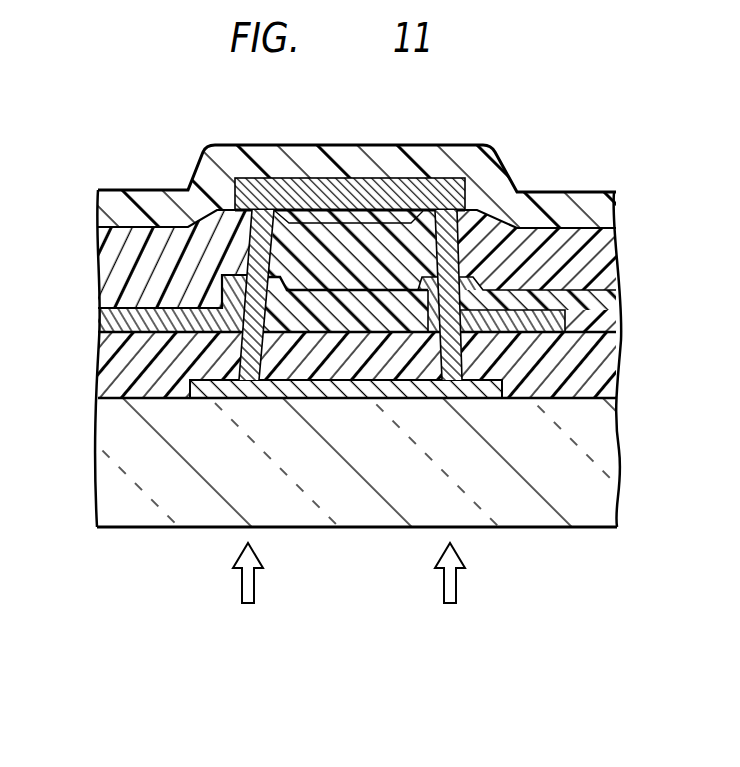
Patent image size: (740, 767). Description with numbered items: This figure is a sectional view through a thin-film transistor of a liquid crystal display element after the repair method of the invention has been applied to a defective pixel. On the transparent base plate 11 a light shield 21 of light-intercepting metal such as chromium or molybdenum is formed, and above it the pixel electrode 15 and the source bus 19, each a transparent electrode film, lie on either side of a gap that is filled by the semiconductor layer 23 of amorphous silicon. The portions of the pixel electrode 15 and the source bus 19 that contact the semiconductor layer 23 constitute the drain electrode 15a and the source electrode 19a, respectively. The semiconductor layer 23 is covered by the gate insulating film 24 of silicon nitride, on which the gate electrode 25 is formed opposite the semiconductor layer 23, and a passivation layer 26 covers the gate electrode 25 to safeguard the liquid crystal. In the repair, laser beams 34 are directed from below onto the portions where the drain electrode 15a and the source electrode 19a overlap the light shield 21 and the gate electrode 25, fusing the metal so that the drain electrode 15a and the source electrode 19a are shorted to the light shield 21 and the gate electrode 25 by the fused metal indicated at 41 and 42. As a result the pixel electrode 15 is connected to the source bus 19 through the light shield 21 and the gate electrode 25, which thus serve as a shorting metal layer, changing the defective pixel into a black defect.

The transparent base plate 11 is at (587, 440).
The pixel electrode 15 is at (108, 323).
The drain electrode 15a is at (228, 338).
The source bus 19 is at (560, 303).
The source electrode 19a is at (505, 305).
The light shield 21 is at (503, 390).
The semiconductor layer 23 is at (383, 295).
The gate insulating film 24 is at (228, 222).
The gate electrode 25 is at (467, 193).
The passivation layer 26 is at (115, 202).
The laser beams 34 is at (254, 592).
The fused metal short 41 is at (245, 256).
The fused metal short 42 is at (463, 243).